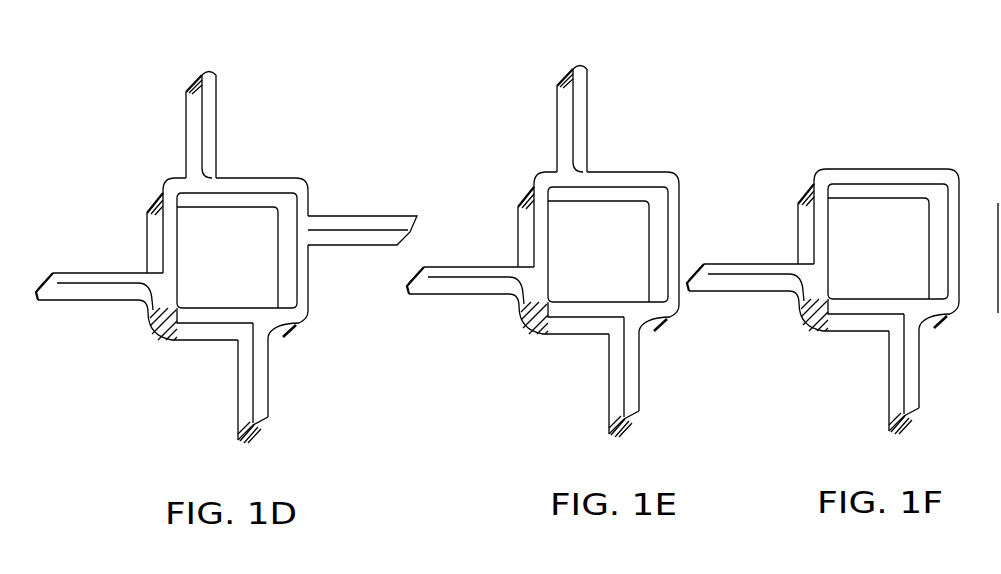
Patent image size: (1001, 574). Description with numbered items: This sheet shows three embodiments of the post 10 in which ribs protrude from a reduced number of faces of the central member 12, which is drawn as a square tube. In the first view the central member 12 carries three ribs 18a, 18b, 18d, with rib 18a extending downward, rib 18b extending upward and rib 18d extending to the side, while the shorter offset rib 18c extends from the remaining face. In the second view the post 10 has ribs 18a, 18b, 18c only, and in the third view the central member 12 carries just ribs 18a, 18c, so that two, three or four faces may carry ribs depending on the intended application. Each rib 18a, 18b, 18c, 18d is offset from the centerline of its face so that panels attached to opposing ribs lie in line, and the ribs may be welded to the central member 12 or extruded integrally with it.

In FIG. 1D, the post 10 is at (297, 340).
In FIG. 1E, the post 10 is at (617, 282).
In FIG. 1F, the post 10 is at (895, 279).
In FIG. 1D, the central member 12 is at (285, 178).
In FIG. 1E, the central member 12 is at (618, 207).
In FIG. 1F, the central member 12 is at (898, 204).
In FIG. 1D, the rib 18a is at (263, 417).
In FIG. 1E, the rib 18a is at (657, 380).
In FIG. 1F, the rib 18a is at (937, 377).
In FIG. 1D, the rib 18b is at (216, 108).
In FIG. 1E, the rib 18b is at (601, 118).
In FIG. 1D, the rib 18c is at (103, 283).
In FIG. 1E, the rib 18c is at (470, 298).
In FIG. 1F, the rib 18c is at (750, 300).
In FIG. 1D, the rib 18d is at (367, 215).